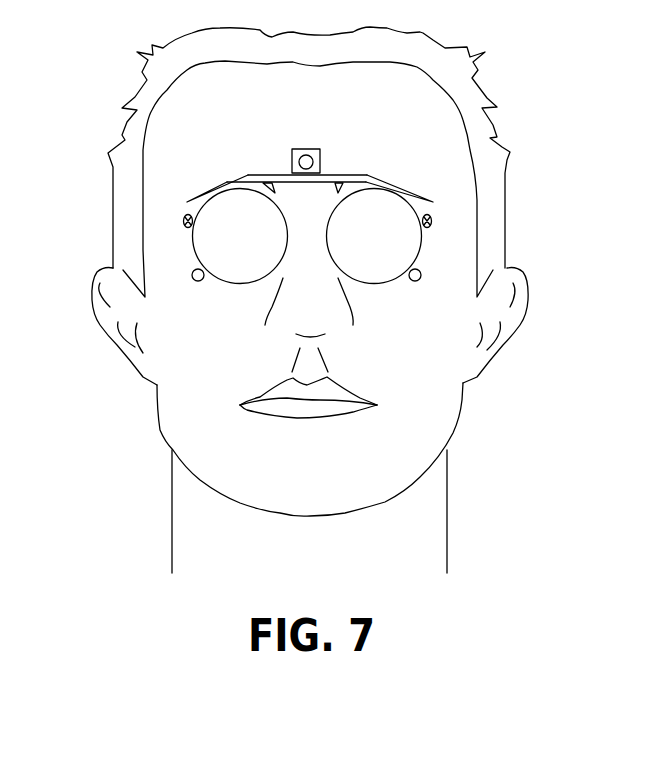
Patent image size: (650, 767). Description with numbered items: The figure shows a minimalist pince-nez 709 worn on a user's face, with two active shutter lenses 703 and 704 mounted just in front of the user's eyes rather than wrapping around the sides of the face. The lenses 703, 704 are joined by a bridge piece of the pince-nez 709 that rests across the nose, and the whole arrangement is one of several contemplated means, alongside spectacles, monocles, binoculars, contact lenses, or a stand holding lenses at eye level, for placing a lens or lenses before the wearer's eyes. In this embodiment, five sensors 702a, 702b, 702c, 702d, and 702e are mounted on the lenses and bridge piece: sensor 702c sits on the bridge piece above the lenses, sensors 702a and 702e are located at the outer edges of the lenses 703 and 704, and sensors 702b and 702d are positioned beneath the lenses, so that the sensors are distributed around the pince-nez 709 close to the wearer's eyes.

The pince-nez 709 is at (378, 174).
The active shutter lens 704 is at (240, 236).
The active shutter lens 703 is at (374, 236).
The sensor 702a is at (433, 217).
The sensor 702b is at (413, 281).
The sensor 702c is at (302, 148).
The sensor 702d is at (202, 281).
The sensor 702e is at (186, 216).